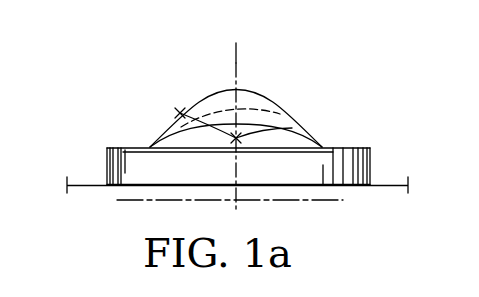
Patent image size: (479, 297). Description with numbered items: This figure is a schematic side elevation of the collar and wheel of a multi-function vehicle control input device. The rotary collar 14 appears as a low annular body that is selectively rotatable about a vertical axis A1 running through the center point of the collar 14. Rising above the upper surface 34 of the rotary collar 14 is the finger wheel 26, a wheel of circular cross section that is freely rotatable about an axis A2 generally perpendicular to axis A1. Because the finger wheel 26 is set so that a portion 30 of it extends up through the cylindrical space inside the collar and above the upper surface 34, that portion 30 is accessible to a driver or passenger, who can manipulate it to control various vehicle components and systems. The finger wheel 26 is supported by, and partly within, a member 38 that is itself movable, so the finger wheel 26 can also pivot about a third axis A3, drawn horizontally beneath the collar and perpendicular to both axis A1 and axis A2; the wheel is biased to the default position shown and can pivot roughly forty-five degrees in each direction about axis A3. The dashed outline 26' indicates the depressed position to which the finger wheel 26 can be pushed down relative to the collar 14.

The rotary collar 14 is at (369, 160).
The finger wheel 26 is at (236, 101).
The depressed position of finger wheel 26' is at (267, 104).
The portion of finger wheel 30 is at (210, 94).
The upper surface of rotary collar 34 is at (121, 147).
The member 38 is at (313, 137).
The axis A1 is at (236, 58).
The axis A2 is at (180, 113).
The axis A3 is at (343, 200).